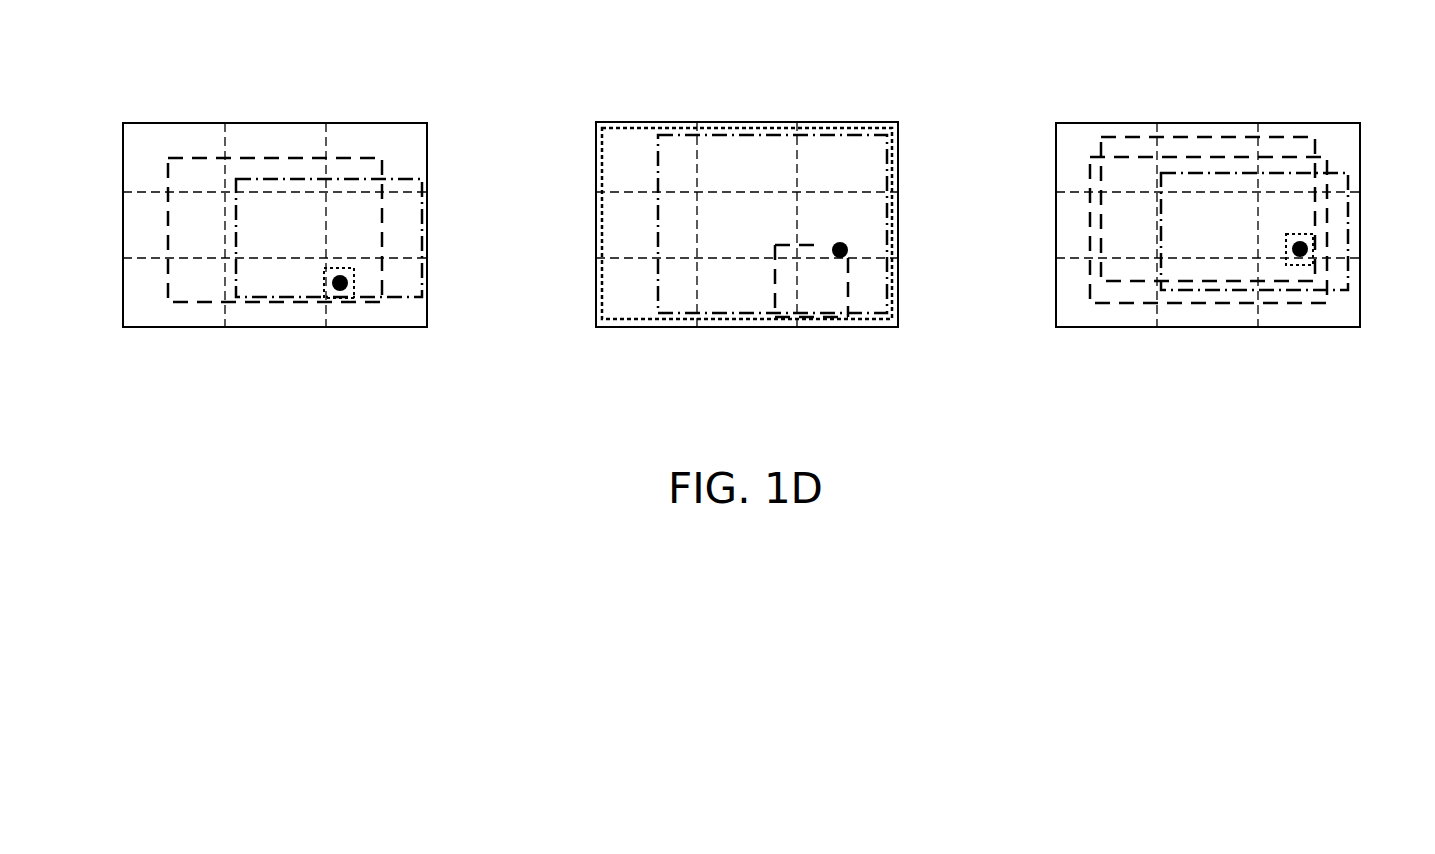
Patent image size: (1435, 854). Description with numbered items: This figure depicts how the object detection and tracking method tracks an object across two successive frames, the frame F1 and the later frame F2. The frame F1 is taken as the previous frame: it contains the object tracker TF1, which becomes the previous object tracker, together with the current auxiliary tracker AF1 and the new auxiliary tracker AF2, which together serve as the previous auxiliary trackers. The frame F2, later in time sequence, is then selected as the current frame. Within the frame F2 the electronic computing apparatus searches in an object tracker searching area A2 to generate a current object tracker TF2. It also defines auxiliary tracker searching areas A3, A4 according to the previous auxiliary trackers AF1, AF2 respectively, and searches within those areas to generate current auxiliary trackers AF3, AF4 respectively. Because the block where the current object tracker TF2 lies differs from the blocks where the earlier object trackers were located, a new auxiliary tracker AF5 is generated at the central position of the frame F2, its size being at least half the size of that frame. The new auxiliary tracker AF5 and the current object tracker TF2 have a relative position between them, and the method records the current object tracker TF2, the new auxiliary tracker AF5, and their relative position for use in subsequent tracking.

The frame F1 is at (279, 88).
The frame F2 is at (752, 88).
The current auxiliary tracker AF1 is at (236, 200).
The new auxiliary tracker AF2 is at (169, 213).
The current auxiliary tracker AF3 is at (1162, 240).
The current auxiliary tracker AF4 is at (1101, 203).
The new auxiliary tracker AF5 is at (1089, 277).
The object tracker TF1 is at (342, 267).
The current object tracker TF2 is at (1309, 252).
The object tracker searching area A2 is at (815, 247).
The auxiliary tracker searching area A3 is at (657, 268).
The auxiliary tracker searching area A4 is at (601, 219).